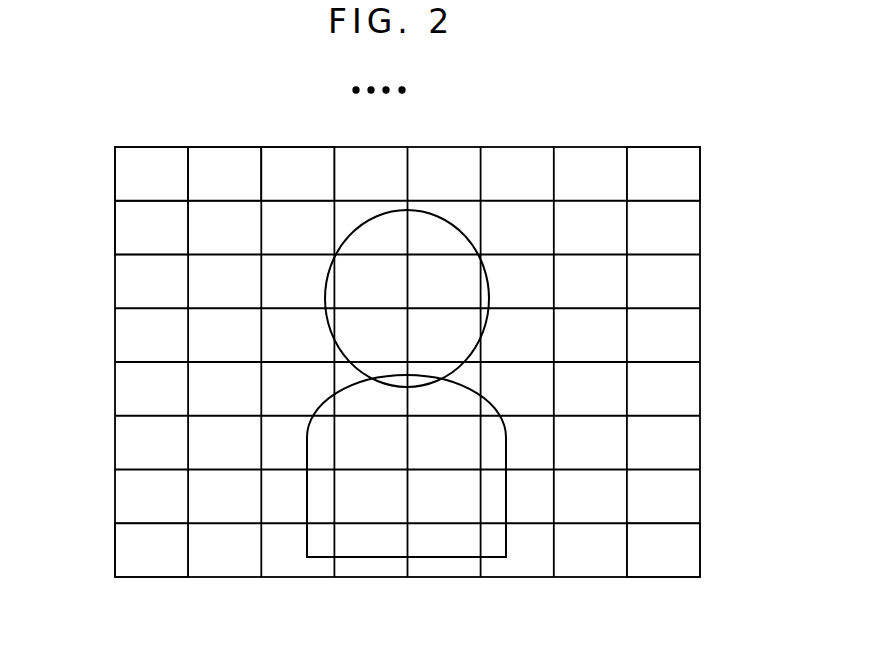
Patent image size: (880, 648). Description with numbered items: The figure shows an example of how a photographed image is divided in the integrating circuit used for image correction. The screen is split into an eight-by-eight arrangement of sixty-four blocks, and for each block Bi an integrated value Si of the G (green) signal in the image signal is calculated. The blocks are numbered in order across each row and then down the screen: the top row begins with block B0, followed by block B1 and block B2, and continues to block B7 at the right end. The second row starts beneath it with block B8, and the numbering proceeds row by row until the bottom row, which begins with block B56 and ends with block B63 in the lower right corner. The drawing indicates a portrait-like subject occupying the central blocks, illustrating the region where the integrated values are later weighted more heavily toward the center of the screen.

The block B0 is at (153, 165).
The block B1 is at (233, 157).
The block B2 is at (305, 157).
The block B7 is at (660, 152).
The block B8 is at (137, 229).
The block B56 is at (135, 557).
The block B63 is at (690, 553).